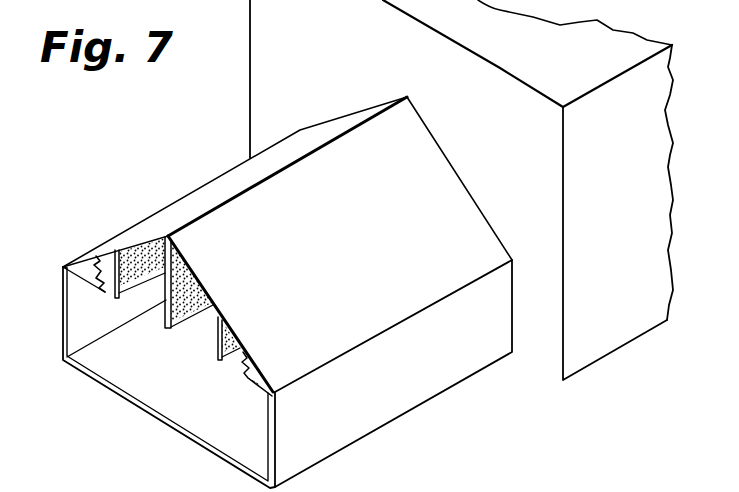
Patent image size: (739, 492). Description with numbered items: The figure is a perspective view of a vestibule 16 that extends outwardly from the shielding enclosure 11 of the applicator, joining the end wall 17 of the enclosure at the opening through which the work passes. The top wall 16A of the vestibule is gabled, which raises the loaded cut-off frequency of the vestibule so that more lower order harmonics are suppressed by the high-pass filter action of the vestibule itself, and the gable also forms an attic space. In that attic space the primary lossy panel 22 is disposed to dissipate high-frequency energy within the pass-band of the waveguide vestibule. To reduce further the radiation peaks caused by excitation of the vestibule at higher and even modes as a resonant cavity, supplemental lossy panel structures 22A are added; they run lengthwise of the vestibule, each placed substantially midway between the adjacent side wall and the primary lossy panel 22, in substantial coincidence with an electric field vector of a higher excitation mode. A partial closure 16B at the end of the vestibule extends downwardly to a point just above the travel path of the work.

The shielding enclosure 11 is at (578, 183).
The end wall 17 is at (270, 33).
The vestibule 16 is at (272, 292).
The top wall 16A is at (248, 218).
The partial closure 16B is at (88, 272).
The lossy panel 22 is at (178, 325).
The supplemental lossy panel structure 22A is at (131, 287).